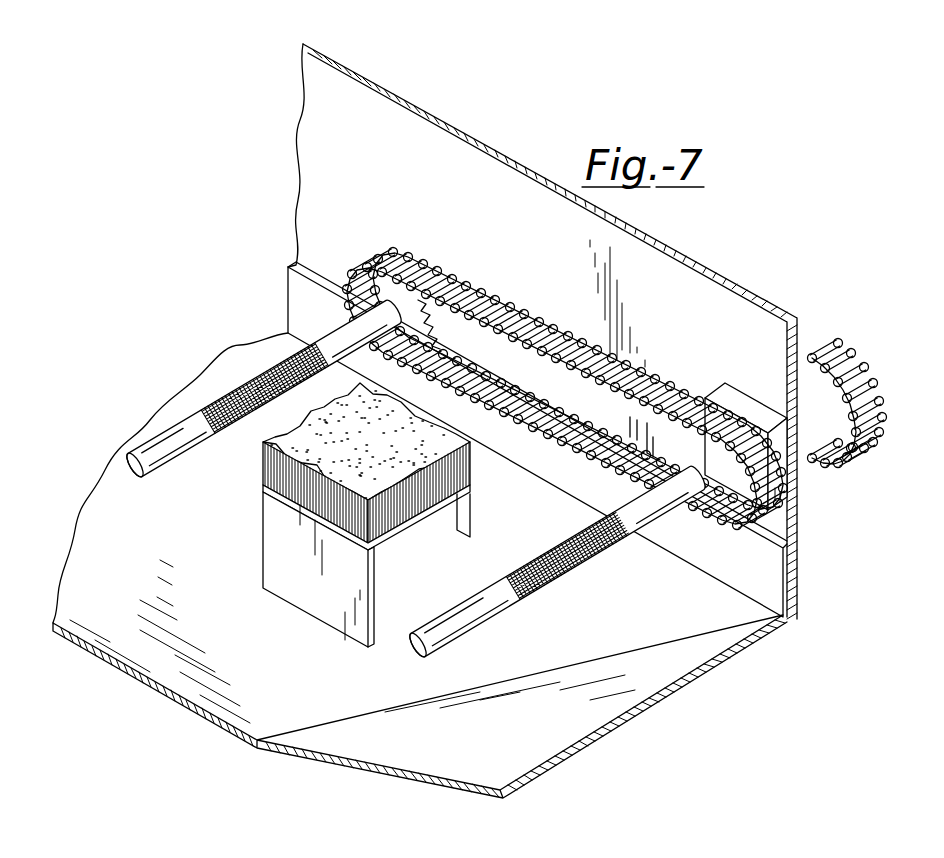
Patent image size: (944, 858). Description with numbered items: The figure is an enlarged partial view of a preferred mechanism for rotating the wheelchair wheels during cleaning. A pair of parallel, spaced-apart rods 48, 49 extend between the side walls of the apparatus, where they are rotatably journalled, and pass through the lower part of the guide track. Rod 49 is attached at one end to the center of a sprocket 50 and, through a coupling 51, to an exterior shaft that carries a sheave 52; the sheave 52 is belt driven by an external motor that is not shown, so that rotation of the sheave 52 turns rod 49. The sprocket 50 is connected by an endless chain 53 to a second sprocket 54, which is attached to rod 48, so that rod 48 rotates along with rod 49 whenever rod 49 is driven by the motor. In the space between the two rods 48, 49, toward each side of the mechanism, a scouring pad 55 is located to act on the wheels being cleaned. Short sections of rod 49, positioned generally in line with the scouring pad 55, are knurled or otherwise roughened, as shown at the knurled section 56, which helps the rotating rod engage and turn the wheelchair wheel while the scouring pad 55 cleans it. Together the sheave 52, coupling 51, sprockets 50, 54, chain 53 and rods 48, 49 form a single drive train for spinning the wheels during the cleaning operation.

The rod 48 is at (172, 462).
The rod 49 is at (457, 642).
The sprocket 50 is at (650, 432).
The coupling 51 is at (783, 482).
The sheave 52 is at (840, 440).
The endless chain 53 is at (663, 393).
The sprocket 54 is at (453, 305).
The scouring pad 55 is at (262, 460).
The knurled section 56 is at (243, 383).